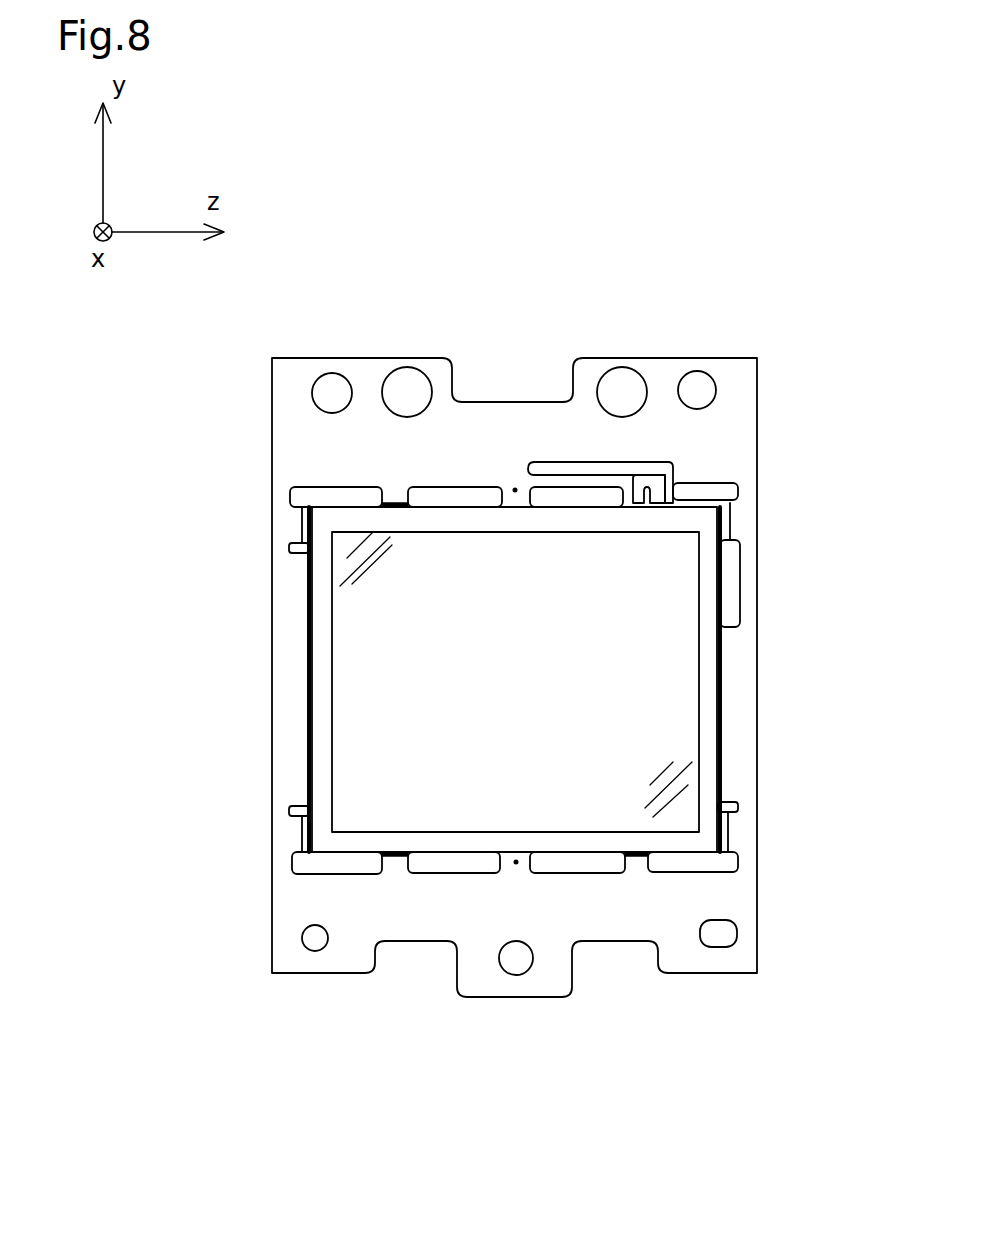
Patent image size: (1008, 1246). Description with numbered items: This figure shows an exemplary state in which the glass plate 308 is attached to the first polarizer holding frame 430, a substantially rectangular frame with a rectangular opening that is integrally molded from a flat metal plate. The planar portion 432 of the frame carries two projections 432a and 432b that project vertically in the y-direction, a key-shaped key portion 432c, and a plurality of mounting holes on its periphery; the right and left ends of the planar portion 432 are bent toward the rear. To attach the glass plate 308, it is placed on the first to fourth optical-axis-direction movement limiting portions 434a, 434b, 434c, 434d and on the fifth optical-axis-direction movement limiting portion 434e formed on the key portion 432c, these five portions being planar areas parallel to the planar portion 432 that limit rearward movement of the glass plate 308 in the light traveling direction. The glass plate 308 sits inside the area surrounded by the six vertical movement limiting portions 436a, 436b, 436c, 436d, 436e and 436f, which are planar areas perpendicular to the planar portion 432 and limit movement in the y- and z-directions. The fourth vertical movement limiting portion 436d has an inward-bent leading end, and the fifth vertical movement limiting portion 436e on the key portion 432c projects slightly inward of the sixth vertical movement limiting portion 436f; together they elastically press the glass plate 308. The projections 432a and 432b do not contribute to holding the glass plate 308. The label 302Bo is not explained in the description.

The first polarizer holding frame 430 is at (775, 230).
The planar portion 432 is at (750, 393).
The projection 432a is at (515, 490).
The projection 432b is at (516, 862).
The key portion 432c is at (652, 462).
The first optical-axis-direction movement limiting portion 434a is at (303, 531).
The second optical-axis-direction movement limiting portion 434b is at (303, 835).
The third optical-axis-direction movement limiting portion 434c is at (728, 835).
The fourth optical-axis-direction movement limiting portion 434d is at (727, 522).
The fifth optical-axis-direction movement limiting portion 434e is at (690, 484).
The first vertical movement limiting portion 436a is at (307, 695).
The second vertical movement limiting portion 436b is at (395, 856).
The third vertical movement limiting portion 436c is at (636, 856).
The fourth vertical movement limiting portion 436d is at (724, 692).
The fifth vertical movement limiting portion 436e is at (652, 478).
The sixth vertical movement limiting portion 436f is at (395, 487).
The glass plate 308 is at (667, 830).
The mirror frame 302Bo is at (702, 850).